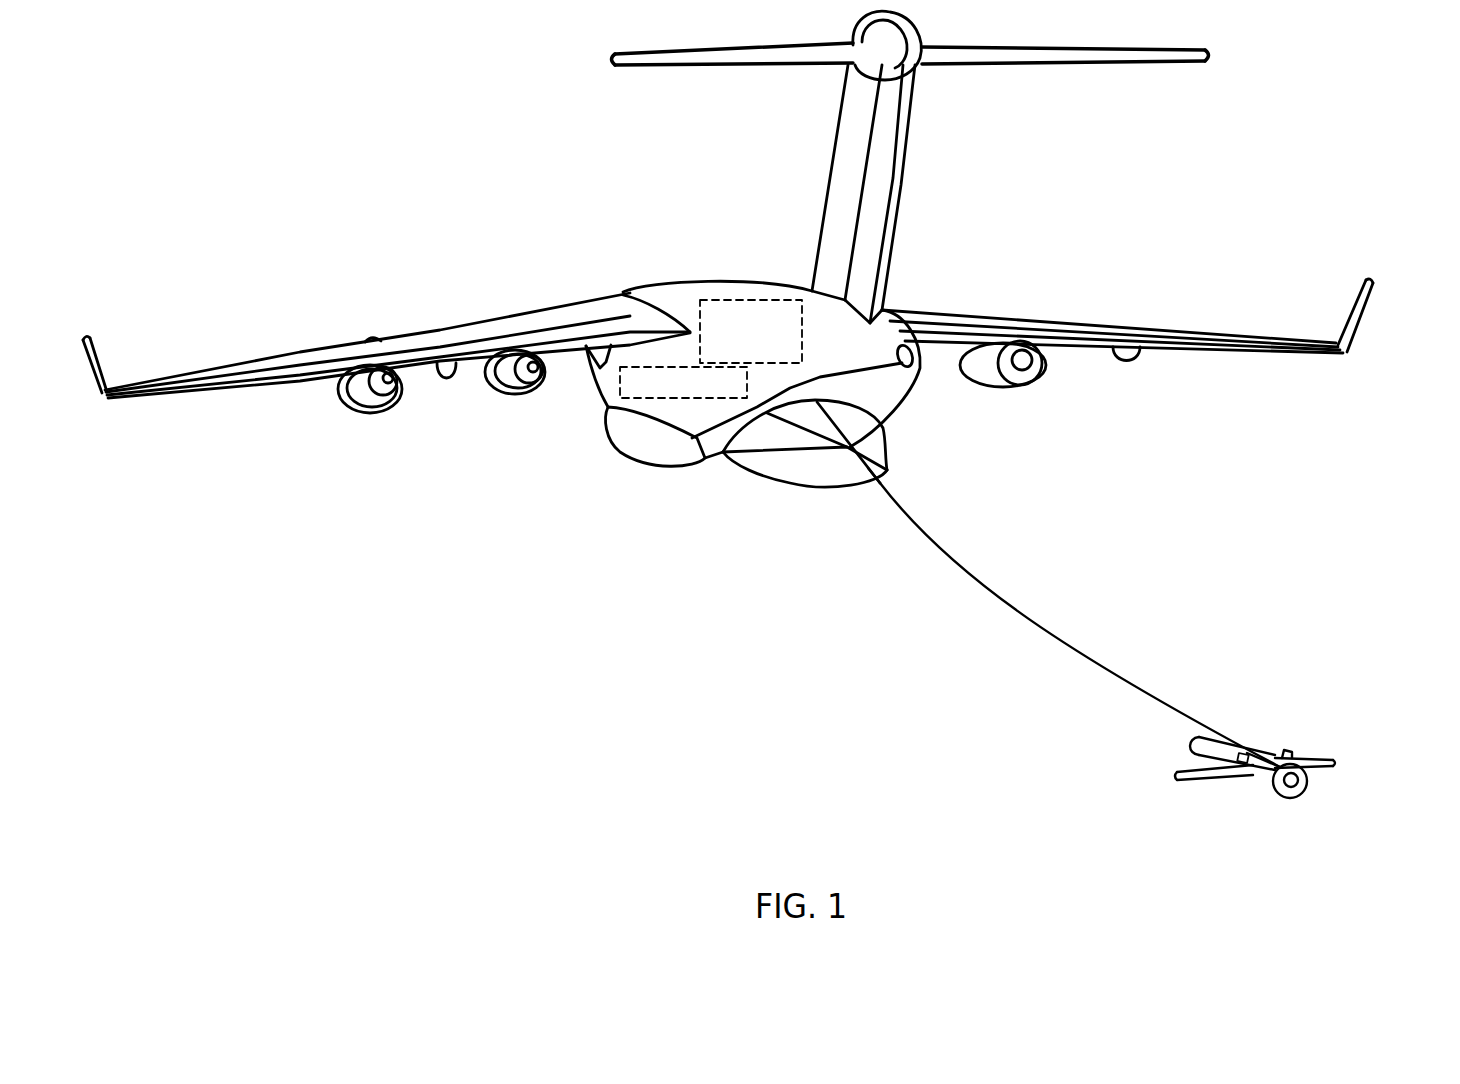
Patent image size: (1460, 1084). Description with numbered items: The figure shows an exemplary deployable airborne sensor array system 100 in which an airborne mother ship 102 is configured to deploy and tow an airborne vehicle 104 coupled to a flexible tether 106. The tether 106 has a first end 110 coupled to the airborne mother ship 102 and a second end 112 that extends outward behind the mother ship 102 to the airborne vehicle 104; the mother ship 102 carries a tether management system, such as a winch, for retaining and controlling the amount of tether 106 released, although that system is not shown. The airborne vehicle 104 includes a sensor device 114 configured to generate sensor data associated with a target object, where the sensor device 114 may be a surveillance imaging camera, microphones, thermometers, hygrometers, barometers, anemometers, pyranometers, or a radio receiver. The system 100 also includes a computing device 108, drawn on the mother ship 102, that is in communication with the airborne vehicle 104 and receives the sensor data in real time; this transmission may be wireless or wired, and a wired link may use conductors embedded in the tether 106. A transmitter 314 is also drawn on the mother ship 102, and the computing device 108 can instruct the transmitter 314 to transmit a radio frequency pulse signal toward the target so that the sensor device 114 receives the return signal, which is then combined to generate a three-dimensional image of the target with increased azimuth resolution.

The deployable airborne sensor array system 100 is at (446, 674).
The airborne mother ship 102 is at (570, 188).
The airborne vehicle 104 is at (1183, 775).
The tether 106 is at (1082, 652).
The computing device 108 is at (737, 298).
The first end 110 is at (920, 420).
The second end 112 is at (1322, 677).
The sensor device 114 is at (1247, 762).
The transmitter 314 is at (679, 397).